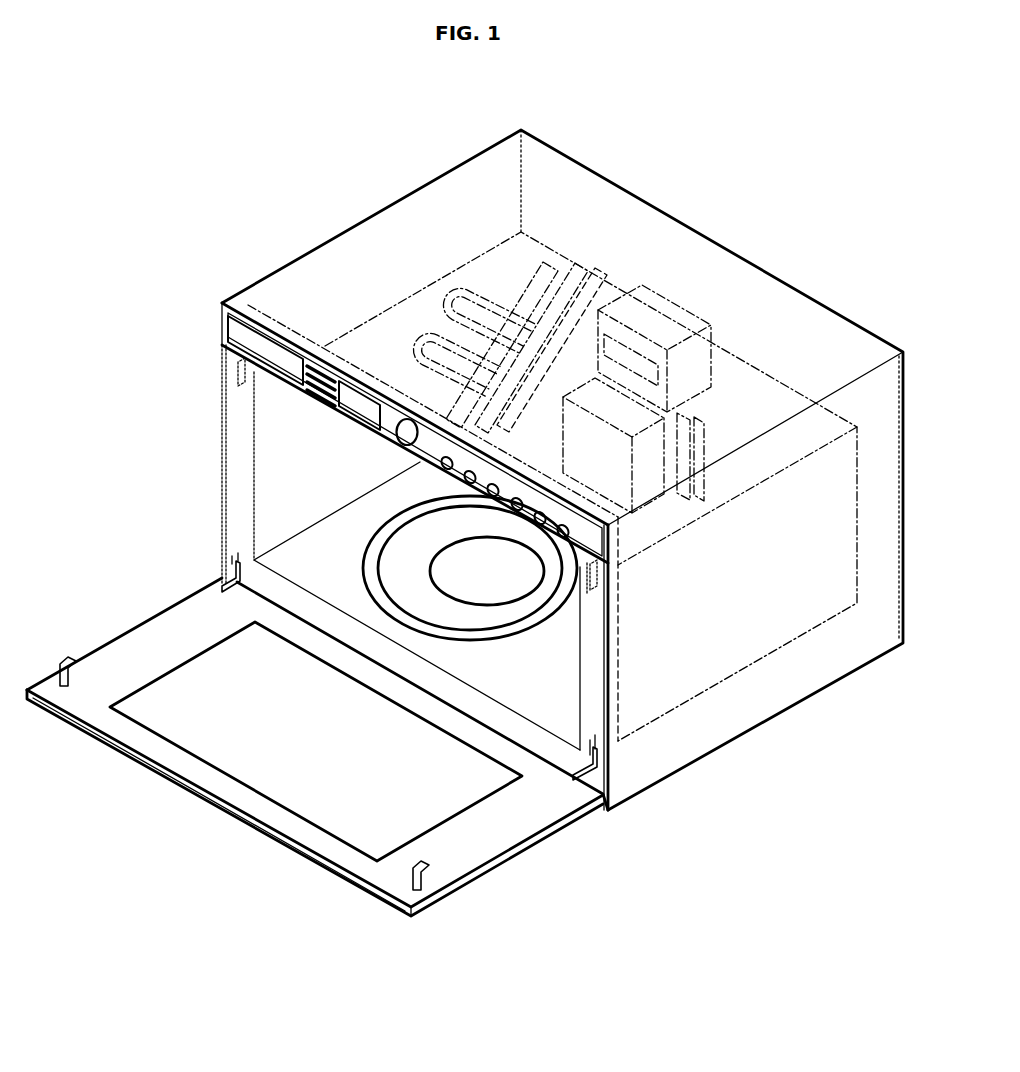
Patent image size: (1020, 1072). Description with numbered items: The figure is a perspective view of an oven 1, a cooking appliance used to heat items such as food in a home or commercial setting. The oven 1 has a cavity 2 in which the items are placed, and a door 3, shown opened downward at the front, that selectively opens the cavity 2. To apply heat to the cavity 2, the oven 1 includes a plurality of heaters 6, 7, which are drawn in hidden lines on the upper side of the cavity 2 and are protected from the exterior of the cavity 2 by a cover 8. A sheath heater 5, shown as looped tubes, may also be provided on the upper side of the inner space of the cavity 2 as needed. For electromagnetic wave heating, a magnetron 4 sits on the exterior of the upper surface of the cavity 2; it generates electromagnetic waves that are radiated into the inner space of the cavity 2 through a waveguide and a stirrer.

The oven 1 is at (834, 254).
The cavity 2 is at (290, 447).
The door 3 is at (500, 828).
The magnetron 4 is at (655, 295).
The sheath heater 5 is at (455, 272).
The heater 6 is at (544, 262).
The heater 7 is at (585, 287).
The cover 8 is at (576, 262).